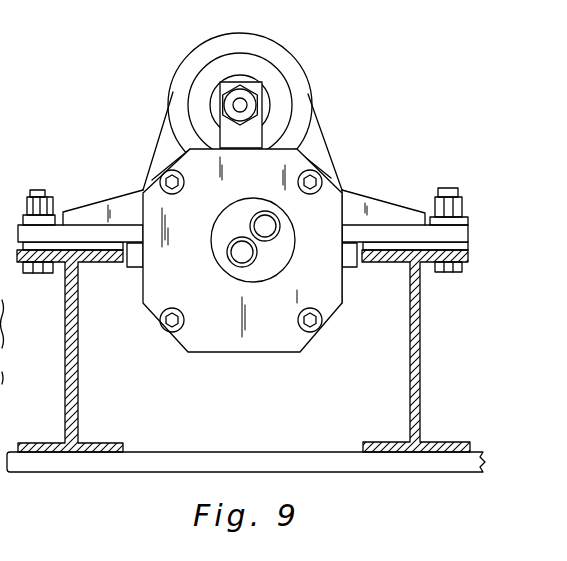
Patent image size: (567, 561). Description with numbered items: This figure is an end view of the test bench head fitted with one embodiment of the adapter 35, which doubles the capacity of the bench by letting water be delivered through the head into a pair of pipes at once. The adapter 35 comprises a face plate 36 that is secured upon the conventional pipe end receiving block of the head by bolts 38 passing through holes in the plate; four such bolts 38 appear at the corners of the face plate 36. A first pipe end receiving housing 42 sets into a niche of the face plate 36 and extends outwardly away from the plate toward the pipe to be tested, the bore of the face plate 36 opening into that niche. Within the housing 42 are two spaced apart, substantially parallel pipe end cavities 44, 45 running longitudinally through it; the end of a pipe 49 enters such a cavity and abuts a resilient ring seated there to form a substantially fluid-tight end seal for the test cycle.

The adapter 35 is at (150, 172).
The face plate 36 is at (335, 208).
The bolts 38 is at (318, 177).
The first pipe end receiving housing 42 is at (287, 265).
The pipe end cavity 44 is at (282, 228).
The pipe end cavity 45 is at (227, 255).
The pipe 49 is at (0, 363).